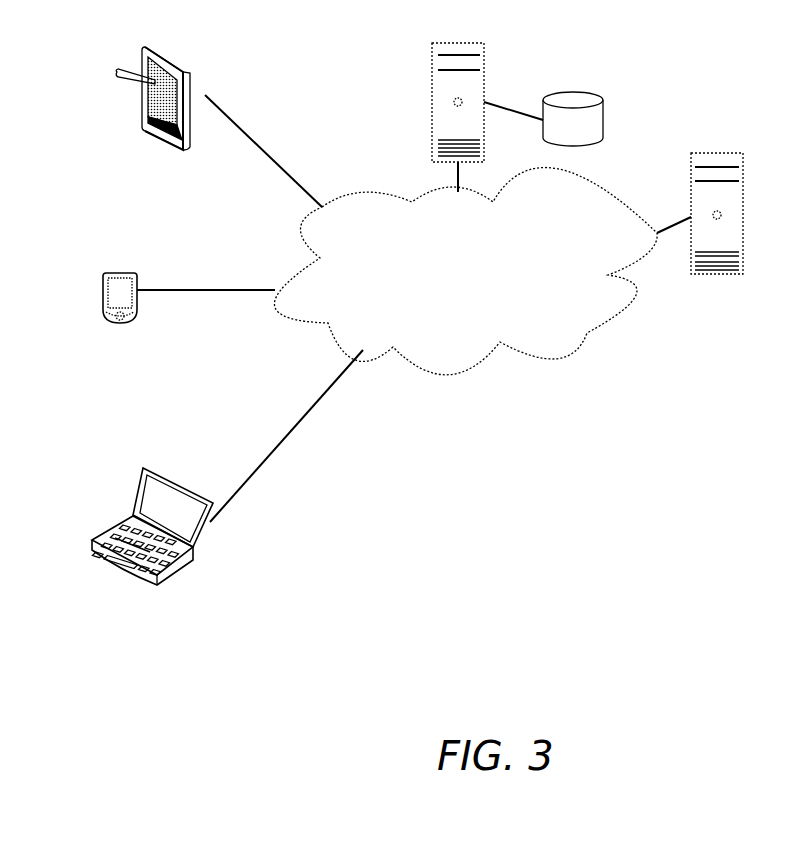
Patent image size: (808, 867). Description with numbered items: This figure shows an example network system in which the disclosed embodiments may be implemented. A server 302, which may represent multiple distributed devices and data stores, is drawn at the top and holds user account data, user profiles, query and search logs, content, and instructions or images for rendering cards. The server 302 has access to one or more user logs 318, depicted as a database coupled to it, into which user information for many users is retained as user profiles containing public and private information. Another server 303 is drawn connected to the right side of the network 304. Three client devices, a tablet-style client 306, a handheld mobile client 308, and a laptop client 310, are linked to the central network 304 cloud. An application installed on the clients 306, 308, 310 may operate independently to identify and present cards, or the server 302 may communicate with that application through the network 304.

The server 302 is at (488, 63).
The server 303 is at (717, 153).
The network 304 is at (465, 271).
The client 306 is at (113, 84).
The client 308 is at (97, 285).
The client 310 is at (112, 513).
The user logs 318 is at (613, 120).